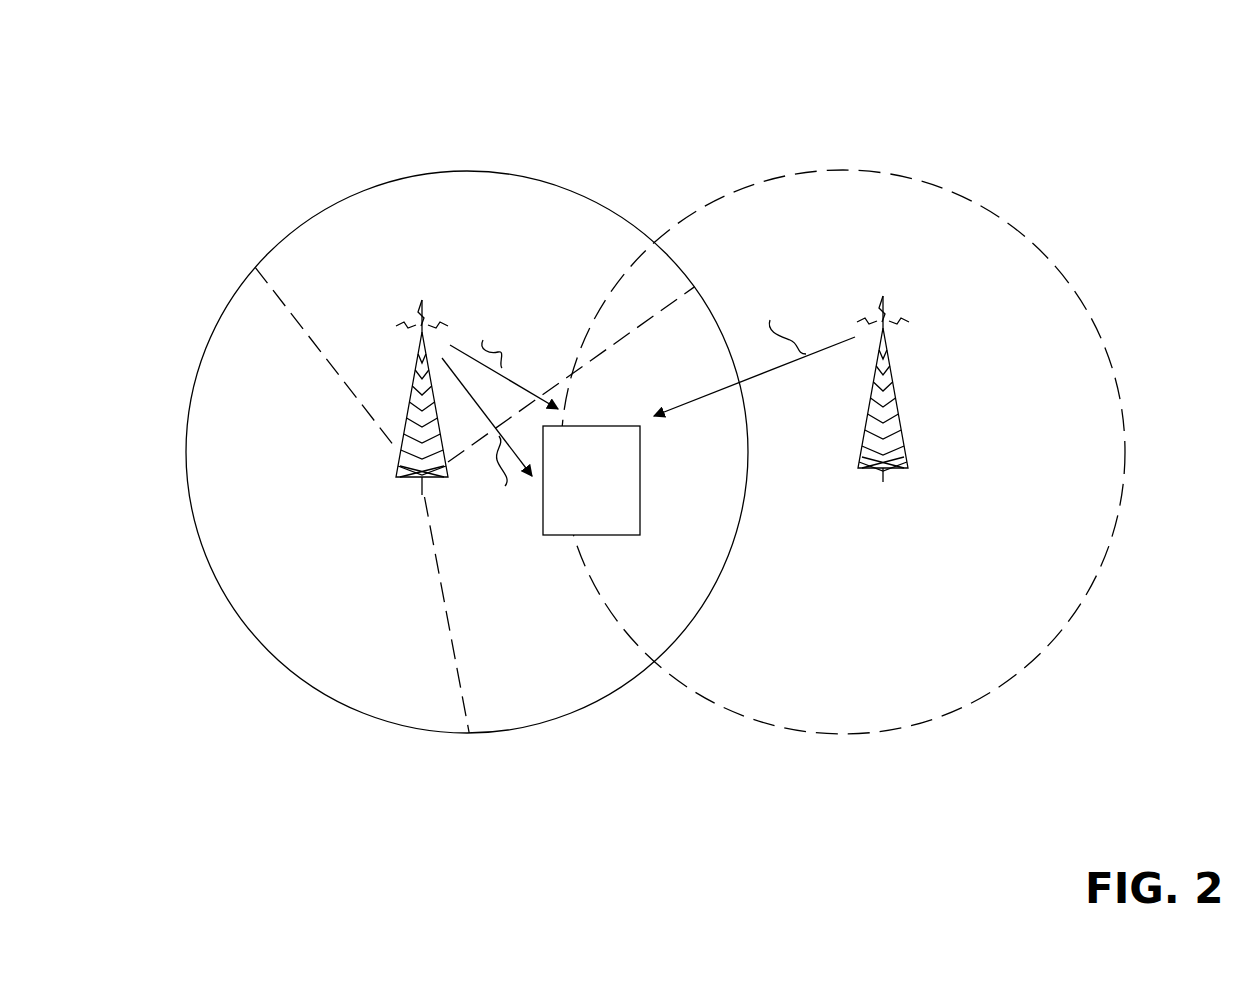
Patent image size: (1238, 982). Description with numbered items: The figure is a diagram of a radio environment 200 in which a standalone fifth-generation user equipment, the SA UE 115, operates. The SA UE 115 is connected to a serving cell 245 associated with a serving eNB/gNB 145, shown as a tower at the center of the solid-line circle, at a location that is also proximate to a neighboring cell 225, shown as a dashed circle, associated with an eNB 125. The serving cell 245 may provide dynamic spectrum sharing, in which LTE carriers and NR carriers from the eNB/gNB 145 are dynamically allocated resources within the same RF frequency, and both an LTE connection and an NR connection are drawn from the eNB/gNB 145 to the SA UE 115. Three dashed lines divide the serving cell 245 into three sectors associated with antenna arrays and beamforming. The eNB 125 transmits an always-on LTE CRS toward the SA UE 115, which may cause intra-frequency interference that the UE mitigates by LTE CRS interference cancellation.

The radio environment 200 is at (152, 56).
The 5G SA UE 115 is at (591, 480).
The eNB 125 is at (894, 382).
The serving eNB/gNB 145 is at (414, 384).
The neighboring cell 225 is at (1106, 346).
The serving cell 245 is at (231, 304).